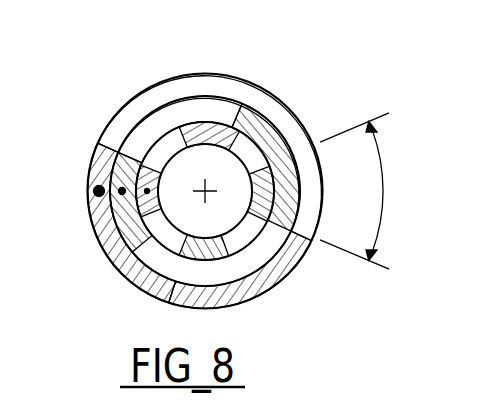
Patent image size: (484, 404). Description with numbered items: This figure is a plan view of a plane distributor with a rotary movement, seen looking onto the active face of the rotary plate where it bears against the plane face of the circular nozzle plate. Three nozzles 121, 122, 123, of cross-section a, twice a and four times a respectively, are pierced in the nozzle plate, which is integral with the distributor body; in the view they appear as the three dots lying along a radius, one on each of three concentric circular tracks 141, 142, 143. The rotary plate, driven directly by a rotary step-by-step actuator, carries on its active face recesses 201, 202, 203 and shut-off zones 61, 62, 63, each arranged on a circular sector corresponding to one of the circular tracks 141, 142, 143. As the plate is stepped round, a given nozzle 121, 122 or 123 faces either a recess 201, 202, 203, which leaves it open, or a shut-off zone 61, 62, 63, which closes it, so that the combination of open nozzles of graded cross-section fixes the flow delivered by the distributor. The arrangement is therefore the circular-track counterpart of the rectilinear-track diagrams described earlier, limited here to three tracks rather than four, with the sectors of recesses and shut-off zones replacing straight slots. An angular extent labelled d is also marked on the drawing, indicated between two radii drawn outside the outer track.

The shut-off zone 61 is at (258, 278).
The shut-off zone 62 is at (268, 113).
The shut-off zone 63 is at (230, 308).
The circular track 141 is at (168, 148).
The circular track 142 is at (178, 113).
The circular track 143 is at (218, 86).
The recess 201 is at (165, 300).
The recess 202 is at (267, 247).
The recess 203 is at (280, 104).
The nozzle 121 is at (118, 268).
The nozzle 122 is at (92, 220).
The nozzle 123 is at (97, 178).
The angle d is at (356, 191).